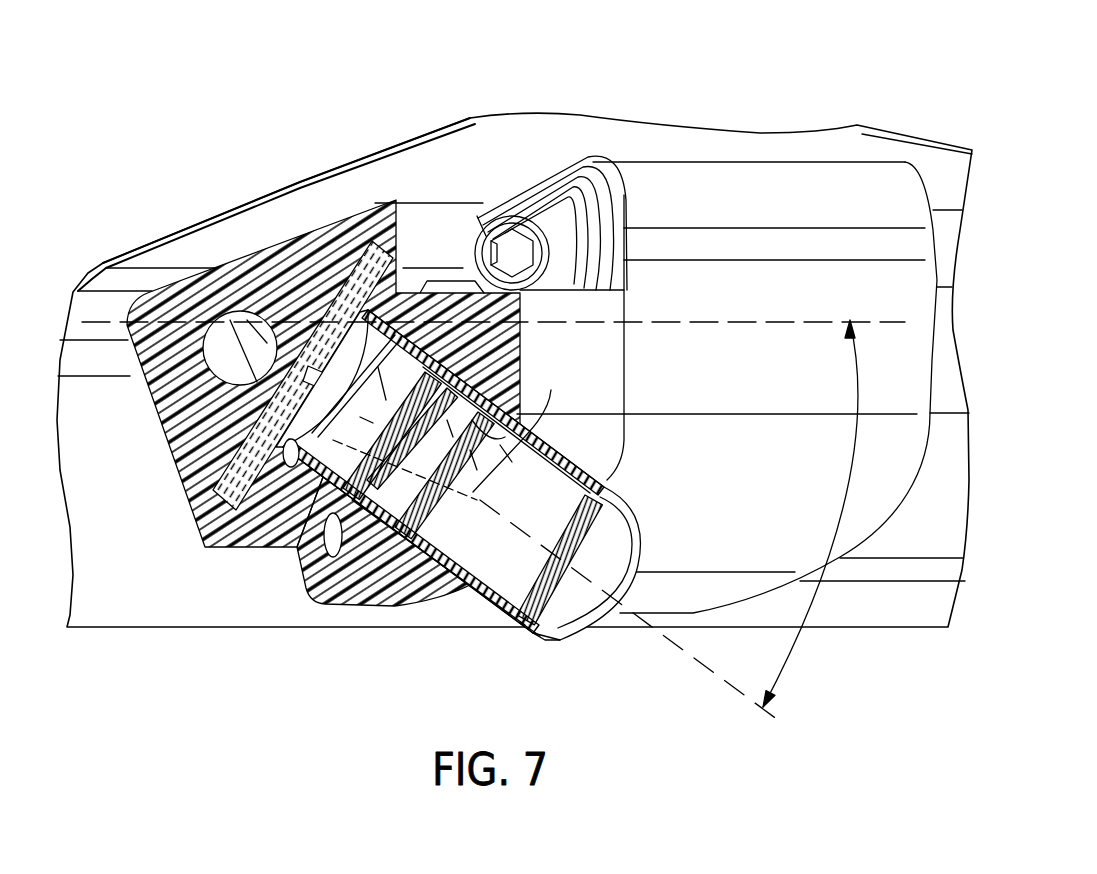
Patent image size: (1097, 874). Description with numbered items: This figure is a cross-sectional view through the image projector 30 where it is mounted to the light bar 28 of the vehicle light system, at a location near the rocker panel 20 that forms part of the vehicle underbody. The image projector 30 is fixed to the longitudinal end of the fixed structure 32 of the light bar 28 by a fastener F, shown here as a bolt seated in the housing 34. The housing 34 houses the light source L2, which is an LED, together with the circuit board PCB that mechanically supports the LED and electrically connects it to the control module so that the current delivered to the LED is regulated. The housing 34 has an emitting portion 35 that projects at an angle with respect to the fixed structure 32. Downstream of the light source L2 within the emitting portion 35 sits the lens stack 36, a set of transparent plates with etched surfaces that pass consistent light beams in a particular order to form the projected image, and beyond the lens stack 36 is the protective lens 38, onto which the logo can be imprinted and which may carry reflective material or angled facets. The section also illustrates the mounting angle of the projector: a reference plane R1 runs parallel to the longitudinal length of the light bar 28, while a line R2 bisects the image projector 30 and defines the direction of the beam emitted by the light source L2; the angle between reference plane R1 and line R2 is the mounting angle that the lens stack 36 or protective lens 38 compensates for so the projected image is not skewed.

The light bar 28 is at (735, 60).
The image projector 30 is at (180, 205).
The fixed structure 32 is at (893, 560).
The housing 34 is at (165, 440).
The emitting portion 35 is at (446, 582).
The lens stack 36 is at (440, 373).
The protective lens 38 is at (625, 542).
The rocker panel 20 is at (97, 335).
The circuit board PCB is at (355, 290).
The fastener F is at (503, 212).
The light source L2 is at (293, 467).
The reference plane R1 is at (742, 325).
The line bisecting the image projector R2 is at (738, 700).